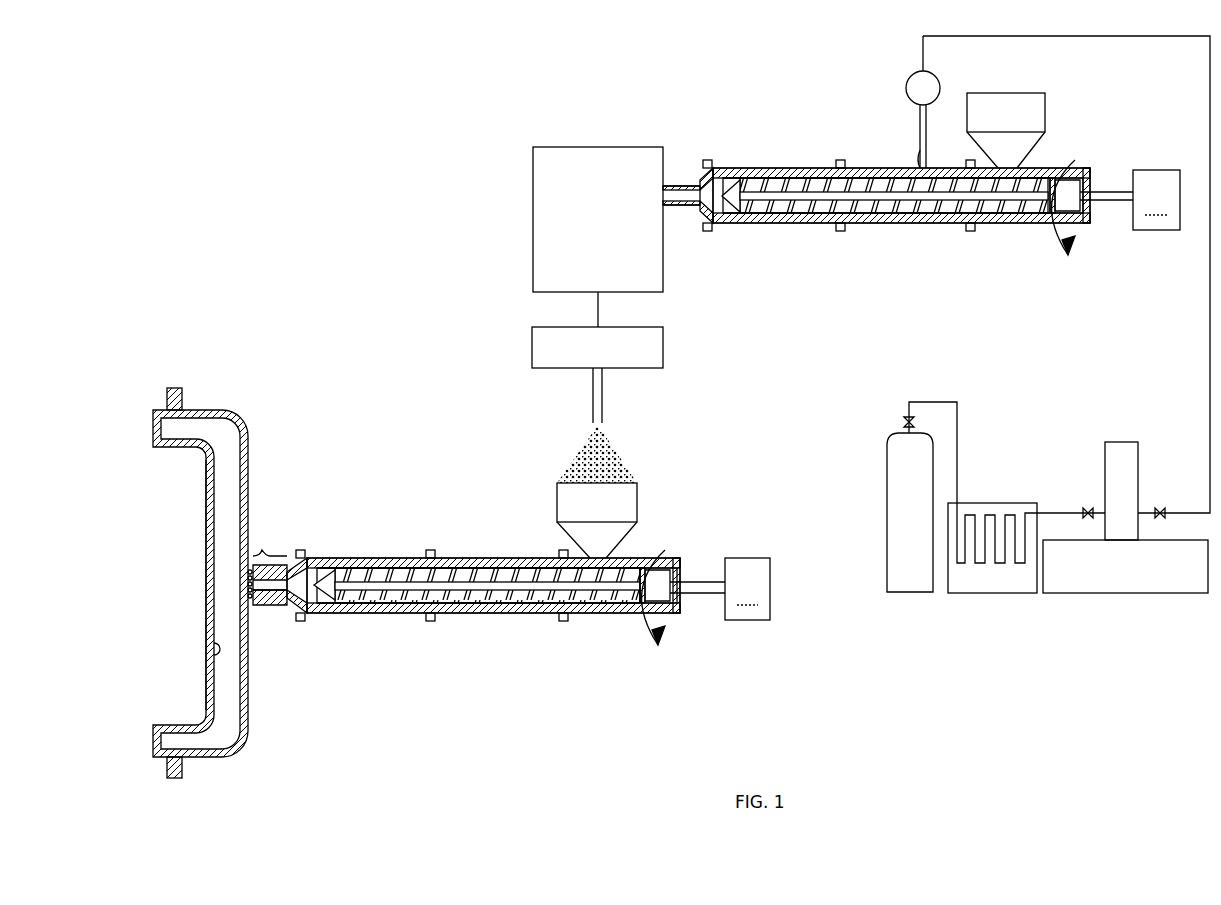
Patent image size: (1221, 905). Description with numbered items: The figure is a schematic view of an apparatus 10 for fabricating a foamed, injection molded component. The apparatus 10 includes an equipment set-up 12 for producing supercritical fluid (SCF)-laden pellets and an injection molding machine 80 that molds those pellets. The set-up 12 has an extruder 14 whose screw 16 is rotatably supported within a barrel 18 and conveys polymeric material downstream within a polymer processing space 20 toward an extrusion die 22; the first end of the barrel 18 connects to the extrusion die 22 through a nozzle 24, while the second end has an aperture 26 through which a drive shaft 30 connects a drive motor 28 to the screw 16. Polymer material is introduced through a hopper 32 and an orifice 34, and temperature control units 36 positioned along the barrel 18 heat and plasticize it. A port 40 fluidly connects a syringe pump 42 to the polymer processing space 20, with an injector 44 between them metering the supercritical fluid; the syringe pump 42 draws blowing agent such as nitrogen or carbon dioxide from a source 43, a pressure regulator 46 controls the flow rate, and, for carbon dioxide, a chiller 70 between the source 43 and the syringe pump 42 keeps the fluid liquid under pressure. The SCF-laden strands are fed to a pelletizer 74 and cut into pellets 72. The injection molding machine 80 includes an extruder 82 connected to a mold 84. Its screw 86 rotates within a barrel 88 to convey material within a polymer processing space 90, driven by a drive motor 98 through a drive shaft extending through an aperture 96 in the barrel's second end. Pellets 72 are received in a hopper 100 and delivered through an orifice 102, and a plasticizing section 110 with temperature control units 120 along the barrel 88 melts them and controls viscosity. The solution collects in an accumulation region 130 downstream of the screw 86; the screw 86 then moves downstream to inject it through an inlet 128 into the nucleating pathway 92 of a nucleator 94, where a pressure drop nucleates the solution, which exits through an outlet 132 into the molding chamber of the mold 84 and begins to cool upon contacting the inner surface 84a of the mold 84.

The apparatus 10 is at (1027, 387).
The equipment set-up 12 is at (1027, 337).
The extruder 14 is at (945, 169).
The screw 16 is at (915, 222).
The barrel 18 is at (890, 168).
The polymer processing space 20 is at (797, 178).
The extrusion die 22 is at (533, 212).
The nozzle 24 is at (705, 175).
The aperture 26 is at (1086, 195).
The drive motor 28 is at (1152, 231).
The drive shaft 30 is at (1110, 201).
The hopper 32 is at (1014, 115).
The orifice 34 is at (1000, 166).
The temperature control units 36 is at (842, 231).
The port 40 is at (919, 165).
The syringe pump 42 is at (1130, 600).
The source 43 is at (915, 598).
The injector 44 is at (920, 125).
The pressure regulator 46 is at (906, 85).
The chiller 70 is at (1000, 600).
The pellets 72 is at (615, 452).
The pelletizer 74 is at (663, 345).
The injection molding machine 80 is at (533, 591).
The extruder 82 is at (533, 588).
The mold 84 is at (216, 589).
The inner surface 84a is at (214, 648).
The screw 86 is at (487, 613).
The barrel 88 is at (520, 603).
The polymer processing space 90 is at (385, 558).
The nucleating pathway 92 is at (265, 606).
The nucleator 94 is at (268, 590).
The aperture 96 is at (682, 582).
The drive motor 98 is at (748, 621).
The hopper 100 is at (622, 546).
The orifice 102 is at (588, 555).
The plasticizing section 110 is at (477, 542).
The temperature control units 120 is at (303, 622).
The inlet 128 is at (295, 565).
The accumulation region 130 is at (322, 575).
The outlet 132 is at (247, 580).